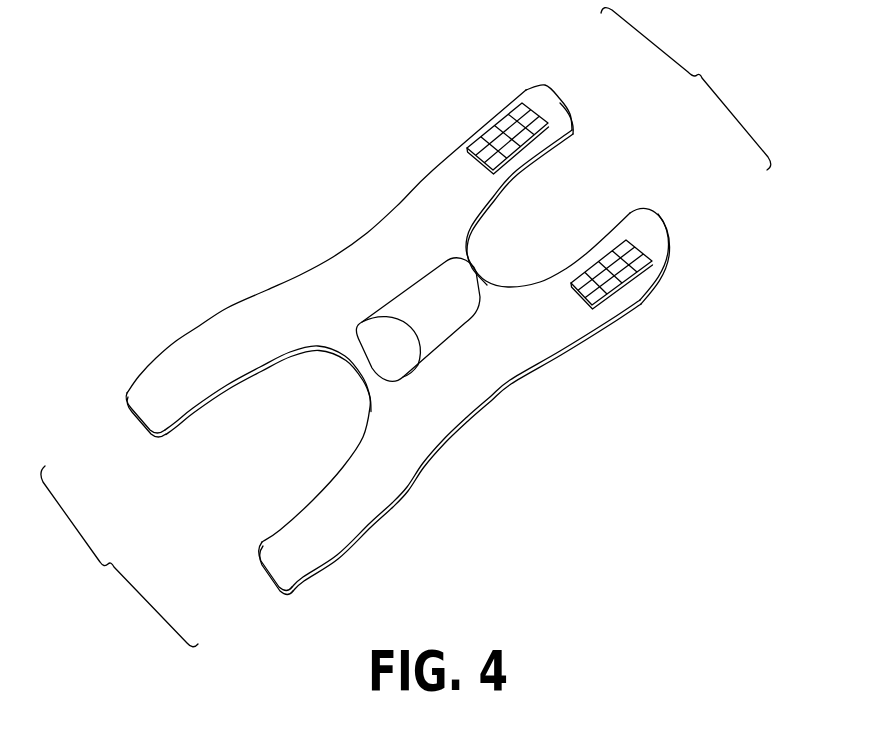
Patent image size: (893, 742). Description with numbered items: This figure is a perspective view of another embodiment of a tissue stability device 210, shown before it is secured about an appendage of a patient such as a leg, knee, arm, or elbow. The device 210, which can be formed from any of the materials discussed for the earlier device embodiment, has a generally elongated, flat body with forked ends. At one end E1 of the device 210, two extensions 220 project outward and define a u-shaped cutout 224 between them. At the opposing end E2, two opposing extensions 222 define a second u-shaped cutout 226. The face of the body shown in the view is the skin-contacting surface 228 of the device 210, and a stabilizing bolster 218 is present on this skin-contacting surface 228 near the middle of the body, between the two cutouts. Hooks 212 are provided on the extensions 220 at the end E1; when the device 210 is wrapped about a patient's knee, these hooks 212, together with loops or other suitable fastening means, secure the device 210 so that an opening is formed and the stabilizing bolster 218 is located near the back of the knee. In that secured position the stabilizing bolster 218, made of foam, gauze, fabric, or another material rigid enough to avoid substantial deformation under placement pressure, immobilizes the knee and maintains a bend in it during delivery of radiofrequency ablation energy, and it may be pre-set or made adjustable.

The tissue stability device 210 is at (403, 331).
The hooks 212 is at (500, 135).
The stabilizing bolster 218 is at (417, 290).
The extensions 220 is at (557, 104).
The opposing extensions 222 is at (143, 420).
The u-shaped cutout 224 is at (558, 202).
The second u-shaped cutout 226 is at (273, 433).
The skin-contacting surface 228 is at (315, 301).
The one end E1 is at (686, 89).
The opposing end E2 is at (119, 556).